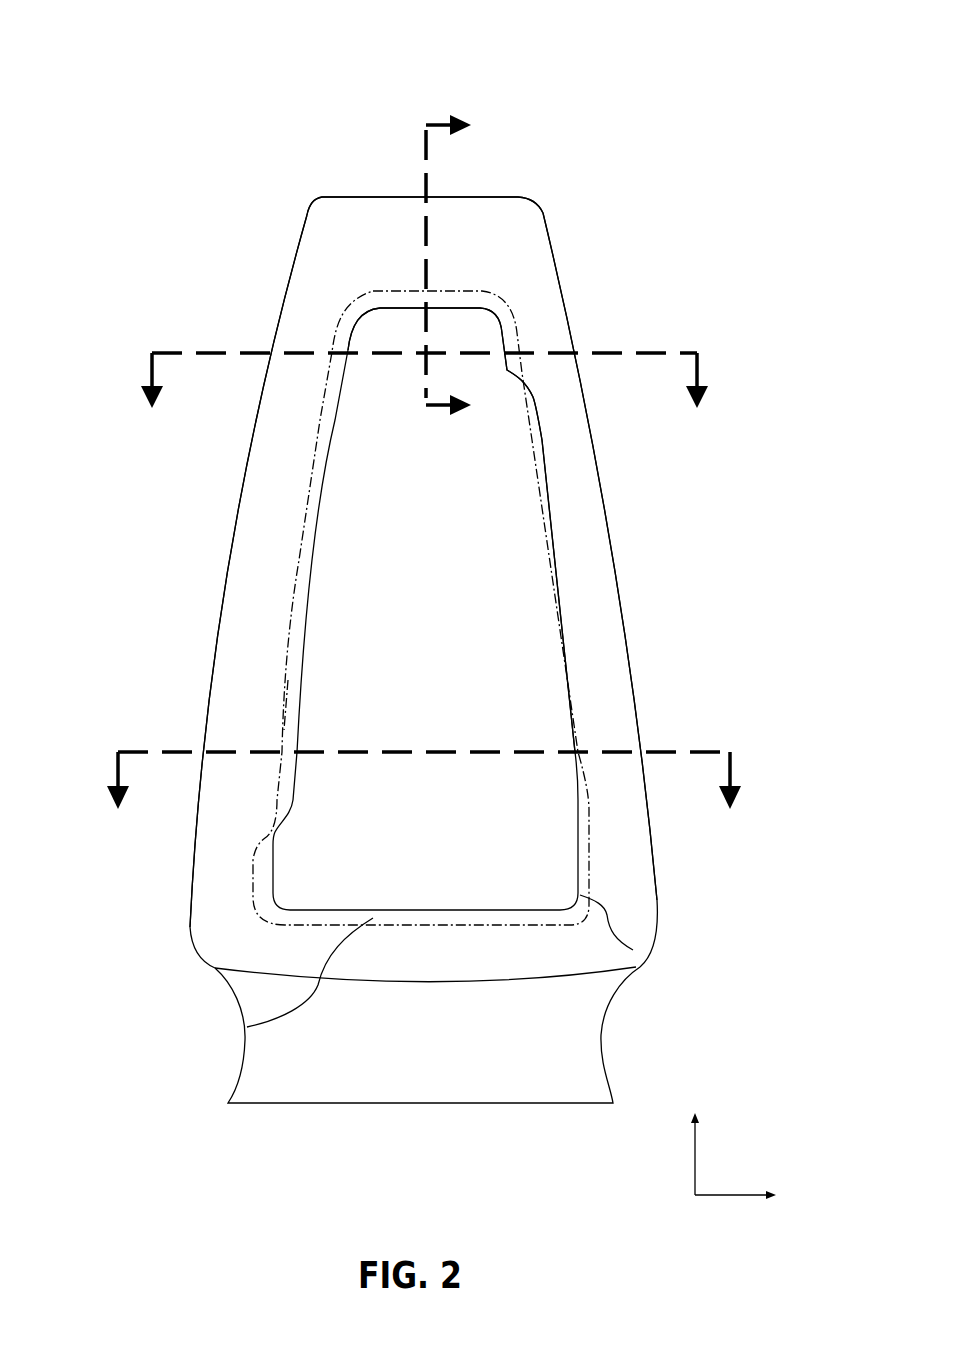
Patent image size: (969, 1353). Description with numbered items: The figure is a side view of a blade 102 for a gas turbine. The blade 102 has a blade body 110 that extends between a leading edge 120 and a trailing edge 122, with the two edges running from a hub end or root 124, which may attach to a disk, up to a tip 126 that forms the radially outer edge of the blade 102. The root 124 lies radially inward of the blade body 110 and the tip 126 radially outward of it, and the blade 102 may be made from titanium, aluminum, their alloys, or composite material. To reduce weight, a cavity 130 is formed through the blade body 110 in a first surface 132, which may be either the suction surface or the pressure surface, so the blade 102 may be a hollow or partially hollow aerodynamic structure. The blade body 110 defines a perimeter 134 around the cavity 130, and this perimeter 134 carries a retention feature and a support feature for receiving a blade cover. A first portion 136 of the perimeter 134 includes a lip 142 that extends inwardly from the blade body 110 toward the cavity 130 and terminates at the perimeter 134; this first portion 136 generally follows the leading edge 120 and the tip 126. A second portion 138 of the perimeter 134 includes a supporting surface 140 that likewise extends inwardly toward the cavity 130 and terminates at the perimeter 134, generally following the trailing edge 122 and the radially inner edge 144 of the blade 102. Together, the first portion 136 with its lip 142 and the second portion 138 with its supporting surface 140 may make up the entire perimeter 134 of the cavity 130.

The blade 102 is at (82, 55).
The blade body 110 is at (605, 653).
The leading edge 120 is at (223, 607).
The trailing edge 122 is at (655, 852).
The root 124 is at (583, 1067).
The tip 126 is at (503, 211).
The cavity 130 is at (515, 608).
The first surface 132 is at (275, 705).
The perimeter 134 is at (300, 703).
The first portion 136 is at (350, 340).
The second portion 138 is at (633, 950).
The supporting surface 140 is at (247, 1027).
The lip 142 is at (303, 602).
The radially inner edge 144 is at (267, 984).